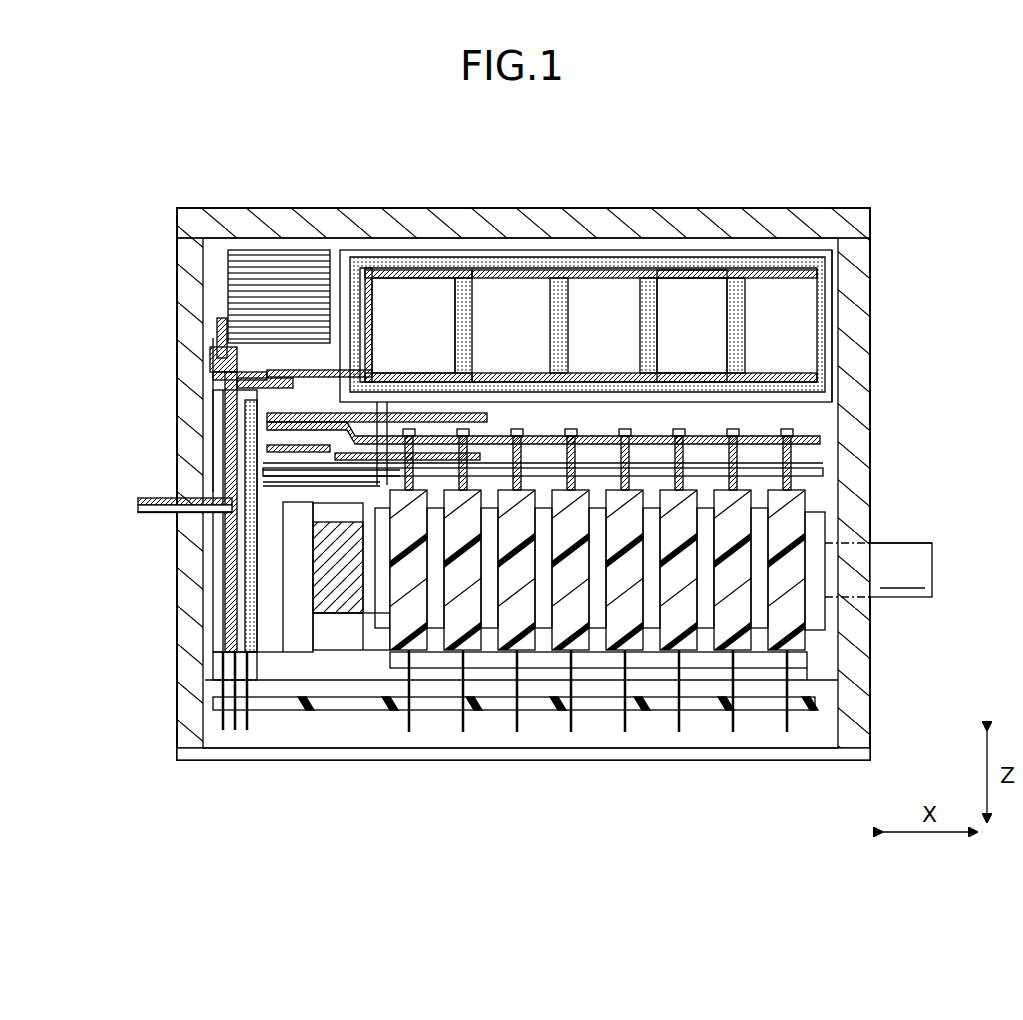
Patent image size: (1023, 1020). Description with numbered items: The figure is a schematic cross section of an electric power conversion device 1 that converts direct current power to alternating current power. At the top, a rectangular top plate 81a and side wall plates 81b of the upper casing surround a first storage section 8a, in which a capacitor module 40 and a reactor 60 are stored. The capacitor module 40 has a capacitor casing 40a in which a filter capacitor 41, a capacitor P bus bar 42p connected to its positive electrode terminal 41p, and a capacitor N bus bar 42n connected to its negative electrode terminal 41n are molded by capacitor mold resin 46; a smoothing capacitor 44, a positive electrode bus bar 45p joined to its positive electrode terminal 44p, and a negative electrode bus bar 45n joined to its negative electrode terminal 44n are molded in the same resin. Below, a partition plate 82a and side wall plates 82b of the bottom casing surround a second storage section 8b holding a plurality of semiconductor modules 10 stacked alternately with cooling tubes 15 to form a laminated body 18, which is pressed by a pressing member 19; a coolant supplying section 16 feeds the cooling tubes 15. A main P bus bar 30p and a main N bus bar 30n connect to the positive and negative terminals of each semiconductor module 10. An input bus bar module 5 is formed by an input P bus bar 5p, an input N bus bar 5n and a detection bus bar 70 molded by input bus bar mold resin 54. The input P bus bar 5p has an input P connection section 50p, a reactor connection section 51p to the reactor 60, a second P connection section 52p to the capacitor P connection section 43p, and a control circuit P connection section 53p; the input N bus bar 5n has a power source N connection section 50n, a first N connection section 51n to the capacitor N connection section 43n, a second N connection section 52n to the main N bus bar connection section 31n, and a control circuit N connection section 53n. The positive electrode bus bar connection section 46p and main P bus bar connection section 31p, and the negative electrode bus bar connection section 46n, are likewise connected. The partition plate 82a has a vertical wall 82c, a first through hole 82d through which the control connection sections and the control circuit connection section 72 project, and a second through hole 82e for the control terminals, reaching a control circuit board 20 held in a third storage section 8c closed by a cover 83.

The electric power conversion device 1 is at (895, 155).
The input bus bar module 5 is at (210, 622).
The input P bus bar 5p is at (213, 600).
The input N bus bar 5n is at (225, 625).
The first storage section 8a is at (837, 243).
The second storage section 8b is at (830, 500).
The third storage section 8c is at (822, 730).
The semiconductor module 10 is at (515, 640).
The cooling tube 15 is at (540, 660).
The coolant supplying section 16 is at (920, 555).
The laminated body 18 is at (825, 620).
The pressing member 19 is at (340, 585).
The control circuit board 20 is at (590, 700).
The main P bus bar 30p is at (820, 440).
The main N bus bar 30n is at (823, 470).
The main P bus bar connection section 31p is at (230, 375).
The main N bus bar connection section 31n is at (228, 455).
The capacitor module 40 is at (835, 288).
The capacitor casing 40a is at (832, 345).
The filter capacitor 41 is at (425, 300).
The positive electrode terminal 41p is at (392, 285).
The negative electrode terminal 41n is at (445, 376).
The capacitor P bus bar 42p is at (360, 262).
The capacitor N bus bar 42n is at (455, 420).
The capacitor P connection section 43p is at (277, 367).
The capacitor N connection section 43n is at (207, 477).
The smoothing capacitor 44 is at (690, 295).
The positive electrode terminal 44p is at (713, 283).
The negative electrode terminal 44n is at (697, 372).
The positive electrode bus bar 45p is at (707, 273).
The negative electrode bus bar 45n is at (677, 372).
The capacitor mold resin 46 is at (823, 318).
The positive electrode bus bar connection section 46p is at (223, 348).
The negative electrode bus bar connection section 46n is at (237, 415).
The input P connection section 50p is at (155, 505).
The power source N connection section 50n is at (195, 512).
The reactor connection section 51p is at (213, 342).
The first N connection section 51n is at (160, 500).
The second P connection section 52p is at (258, 372).
The second N connection section 52n is at (213, 462).
The control circuit P connection section 53p is at (237, 728).
The control circuit N connection section 53n is at (222, 728).
The input bus bar mold resin 54 is at (205, 665).
The reactor 60 is at (225, 267).
The detection bus bar 70 is at (210, 705).
The control circuit connection section 72 is at (250, 722).
The top plate 81a is at (537, 230).
The side wall plate 81b is at (190, 265).
The partition plate 82a is at (300, 620).
The side wall plate 82b is at (810, 668).
The vertical wall 82c is at (358, 667).
The first through hole 82d is at (288, 650).
The second through hole 82e is at (810, 682).
The cover 83 is at (720, 757).